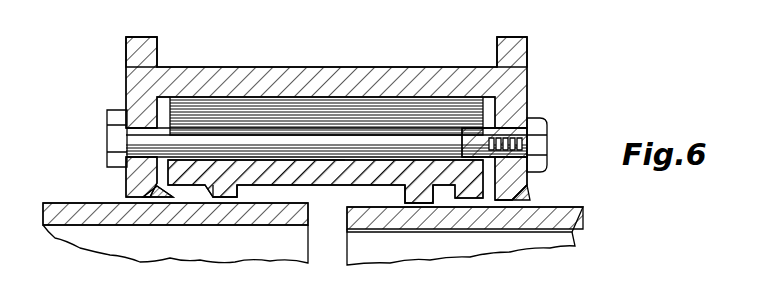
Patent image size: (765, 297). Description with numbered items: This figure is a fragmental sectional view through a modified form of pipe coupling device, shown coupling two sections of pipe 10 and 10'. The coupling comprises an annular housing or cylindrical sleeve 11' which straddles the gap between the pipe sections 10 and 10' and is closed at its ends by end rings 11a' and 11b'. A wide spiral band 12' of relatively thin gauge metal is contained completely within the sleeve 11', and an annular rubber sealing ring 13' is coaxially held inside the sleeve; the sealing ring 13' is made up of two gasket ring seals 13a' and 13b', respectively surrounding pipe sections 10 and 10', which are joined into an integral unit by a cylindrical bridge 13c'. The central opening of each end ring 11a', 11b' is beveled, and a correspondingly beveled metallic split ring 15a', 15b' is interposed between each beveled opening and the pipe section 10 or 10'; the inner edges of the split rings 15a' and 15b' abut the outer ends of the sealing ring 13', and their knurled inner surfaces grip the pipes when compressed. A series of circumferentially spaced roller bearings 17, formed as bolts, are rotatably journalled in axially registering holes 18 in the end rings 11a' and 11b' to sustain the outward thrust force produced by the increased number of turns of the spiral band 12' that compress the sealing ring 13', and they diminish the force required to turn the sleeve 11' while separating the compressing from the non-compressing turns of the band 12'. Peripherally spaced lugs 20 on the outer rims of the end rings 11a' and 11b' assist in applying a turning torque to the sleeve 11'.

The pipe section 10 is at (175, 243).
The pipe section 10' is at (465, 248).
The sleeve 11' is at (326, 82).
The end ring 11a' is at (99, 176).
The end ring 11b' is at (558, 178).
The spiral band 12' is at (326, 87).
The sealing ring 13' is at (374, 165).
The gasket ring seal 13a' is at (246, 218).
The gasket ring seal 13b' is at (422, 219).
The cylindrical bridge 13c' is at (333, 228).
The split ring 15a' is at (136, 234).
The split ring 15b' is at (536, 194).
The roller bearing 17 is at (352, 135).
The hole 18 is at (137, 122).
The lug 20 is at (148, 48).